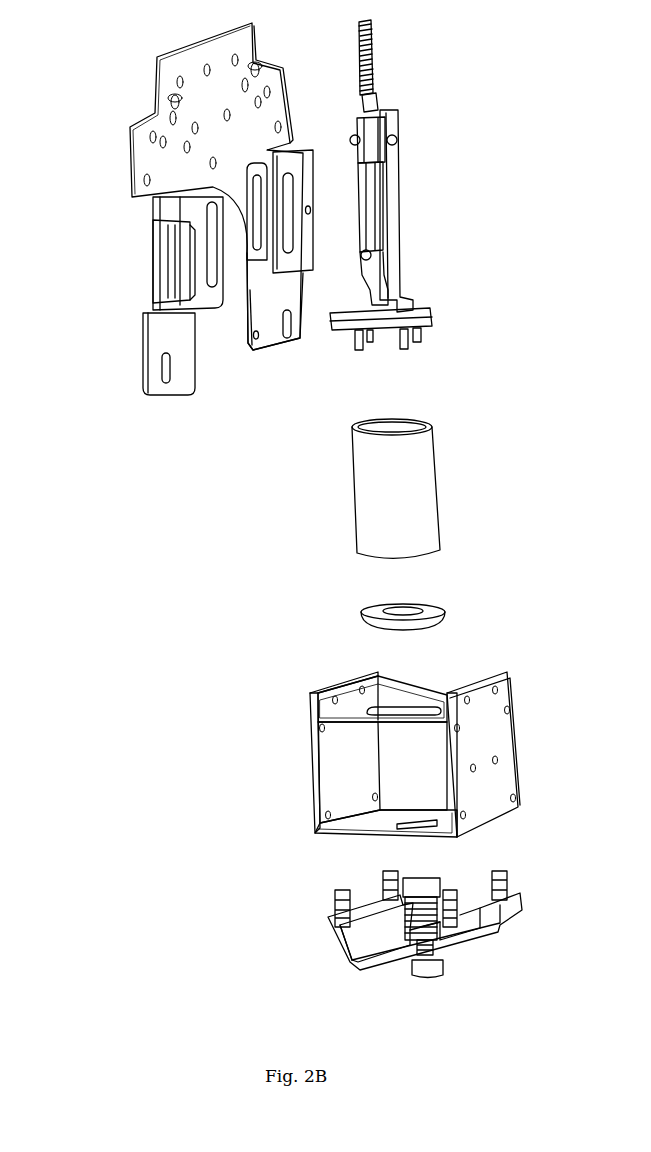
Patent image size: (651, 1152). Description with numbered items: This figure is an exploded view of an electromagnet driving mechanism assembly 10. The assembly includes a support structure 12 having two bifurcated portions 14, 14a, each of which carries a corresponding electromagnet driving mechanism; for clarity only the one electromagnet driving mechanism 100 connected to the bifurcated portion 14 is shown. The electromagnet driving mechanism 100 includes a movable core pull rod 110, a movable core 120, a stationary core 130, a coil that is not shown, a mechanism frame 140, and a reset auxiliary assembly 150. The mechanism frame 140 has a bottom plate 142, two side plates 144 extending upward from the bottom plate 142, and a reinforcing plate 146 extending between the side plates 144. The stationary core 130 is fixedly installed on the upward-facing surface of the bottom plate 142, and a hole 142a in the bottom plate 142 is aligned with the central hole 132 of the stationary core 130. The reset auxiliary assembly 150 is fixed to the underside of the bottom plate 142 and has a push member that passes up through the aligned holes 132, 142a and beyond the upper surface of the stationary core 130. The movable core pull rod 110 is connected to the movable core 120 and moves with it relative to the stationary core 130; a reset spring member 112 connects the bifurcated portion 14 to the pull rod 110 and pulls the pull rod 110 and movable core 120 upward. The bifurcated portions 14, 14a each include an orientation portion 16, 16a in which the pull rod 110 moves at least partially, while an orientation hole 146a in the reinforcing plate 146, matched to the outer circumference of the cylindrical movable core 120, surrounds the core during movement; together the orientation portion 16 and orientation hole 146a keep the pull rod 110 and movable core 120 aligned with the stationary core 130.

The electromagnet driving mechanism assembly 10 is at (103, 70).
The support structure 12 is at (148, 160).
The bifurcated portion 14 is at (180, 350).
The bifurcated portion 14a is at (288, 302).
The orientation portion 16 is at (185, 265).
The orientation portion 16a is at (295, 235).
The electromagnet driving mechanism 100 is at (447, 139).
The movable core pull rod 110 is at (400, 226).
The reset spring member 112 is at (373, 62).
The movable core 120 is at (423, 483).
The stationary core 130 is at (372, 611).
The central hole 132 is at (415, 608).
The mechanism frame 140 is at (497, 749).
The bottom plate 142 is at (375, 830).
The hole 142a is at (427, 829).
The side plate 144 is at (338, 769).
The reinforcing plate 146 is at (350, 712).
The orientation hole 146a is at (410, 710).
The reset auxiliary assembly 150 is at (504, 969).